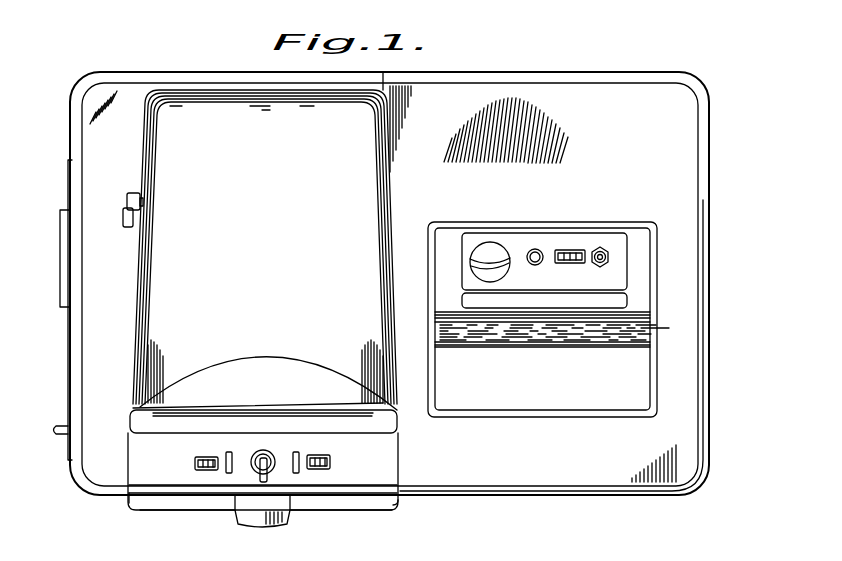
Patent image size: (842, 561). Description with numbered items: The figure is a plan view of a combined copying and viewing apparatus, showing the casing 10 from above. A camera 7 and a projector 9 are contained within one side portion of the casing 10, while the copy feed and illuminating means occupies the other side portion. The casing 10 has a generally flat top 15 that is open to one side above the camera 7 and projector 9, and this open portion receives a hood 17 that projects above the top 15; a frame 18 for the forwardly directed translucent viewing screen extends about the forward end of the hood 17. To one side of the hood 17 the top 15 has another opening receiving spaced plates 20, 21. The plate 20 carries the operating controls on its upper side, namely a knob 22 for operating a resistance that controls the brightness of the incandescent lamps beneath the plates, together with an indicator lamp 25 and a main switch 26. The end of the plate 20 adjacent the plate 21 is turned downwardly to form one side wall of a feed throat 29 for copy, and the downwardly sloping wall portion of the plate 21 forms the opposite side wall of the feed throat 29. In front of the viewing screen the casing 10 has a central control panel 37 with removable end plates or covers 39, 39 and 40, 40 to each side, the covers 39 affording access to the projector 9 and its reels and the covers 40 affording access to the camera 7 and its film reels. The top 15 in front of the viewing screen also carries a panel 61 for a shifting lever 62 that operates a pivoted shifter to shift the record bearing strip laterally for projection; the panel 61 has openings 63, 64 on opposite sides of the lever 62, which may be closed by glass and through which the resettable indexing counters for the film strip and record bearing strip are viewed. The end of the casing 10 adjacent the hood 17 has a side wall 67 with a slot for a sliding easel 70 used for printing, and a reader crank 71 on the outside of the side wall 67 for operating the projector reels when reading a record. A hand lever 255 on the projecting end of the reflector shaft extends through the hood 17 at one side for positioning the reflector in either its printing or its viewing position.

The casing 10 is at (712, 205).
The flat top 15 is at (582, 455).
The hood 17 is at (166, 290).
The frame 18 is at (128, 425).
The plate 20 is at (640, 270).
The plate 21 is at (620, 398).
The knob 22 is at (480, 256).
The indicator lamp 25 is at (536, 250).
The main switch 26 is at (603, 250).
The feed throat 29 is at (640, 335).
The central control panel 37 is at (240, 514).
The removable end plates or covers 39 is at (152, 505).
The removable end plates or covers 40 is at (306, 512).
The camera 7 is at (358, 508).
The projector 9 is at (190, 500).
The panel 61 is at (385, 466).
The shifting lever 62 is at (268, 478).
The opening 63 is at (195, 464).
The opening 64 is at (330, 462).
The side wall 67 is at (70, 156).
The sliding easel 70 is at (62, 262).
The reader crank 71 is at (58, 436).
The hand lever 255 is at (127, 201).